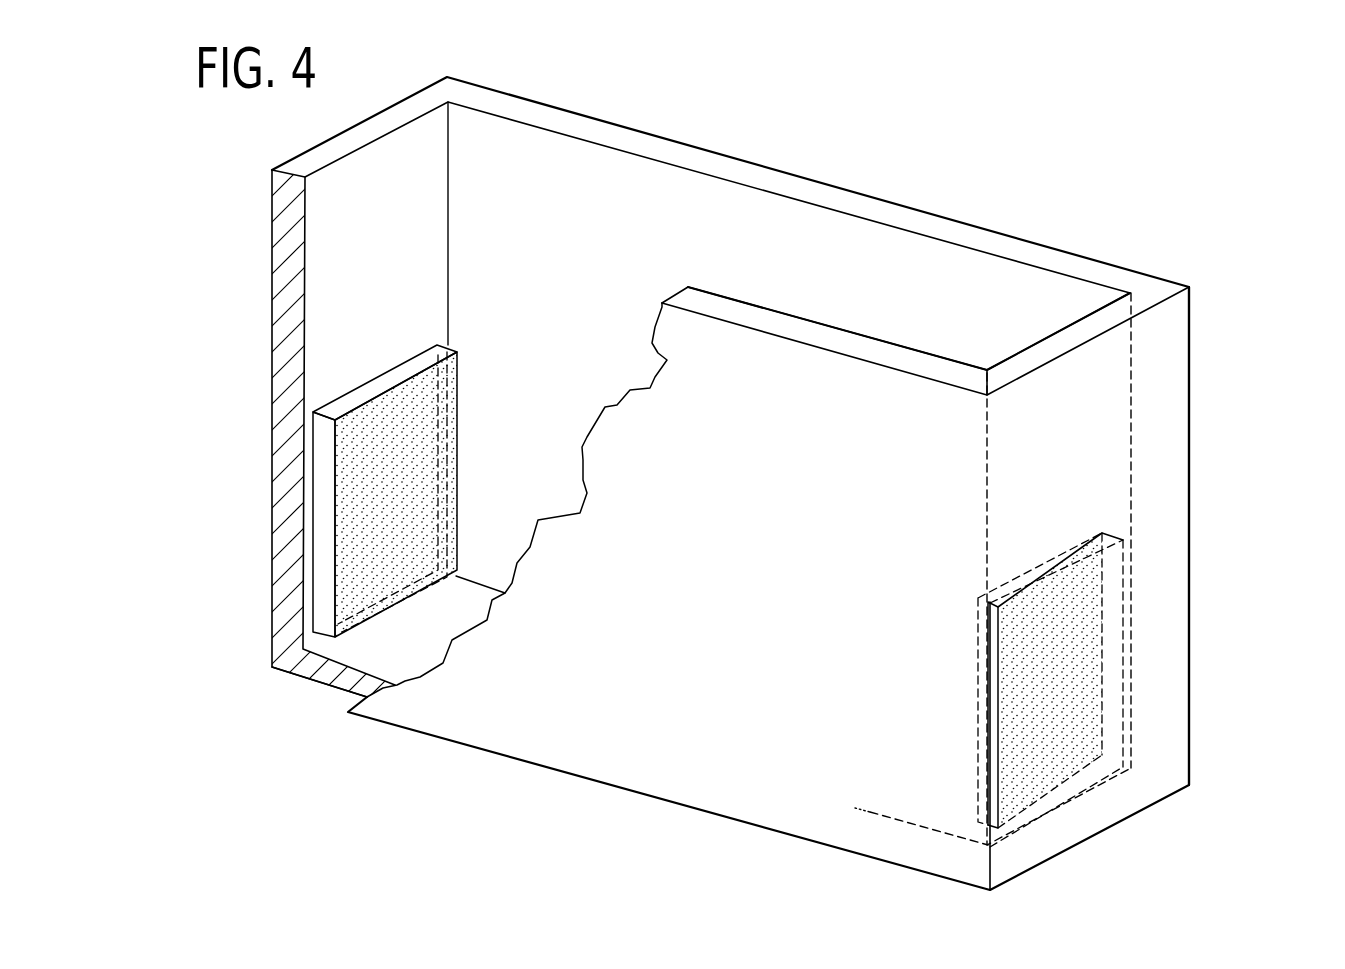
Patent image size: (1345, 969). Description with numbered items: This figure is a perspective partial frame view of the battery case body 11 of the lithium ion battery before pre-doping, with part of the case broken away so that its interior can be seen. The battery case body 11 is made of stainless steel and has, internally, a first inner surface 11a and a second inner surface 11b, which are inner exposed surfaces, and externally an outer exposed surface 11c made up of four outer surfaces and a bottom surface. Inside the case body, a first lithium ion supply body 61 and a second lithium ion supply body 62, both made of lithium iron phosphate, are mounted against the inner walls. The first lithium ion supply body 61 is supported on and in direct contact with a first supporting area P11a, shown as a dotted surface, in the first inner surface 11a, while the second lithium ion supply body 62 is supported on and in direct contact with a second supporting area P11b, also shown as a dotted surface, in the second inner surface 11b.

The battery case body 11 is at (1175, 355).
The first inner surface 11a is at (1050, 331).
The second inner surface 11b is at (358, 295).
The outer exposed surface 11c is at (1175, 515).
The first lithium ion supply body 61 is at (972, 725).
The second lithium ion supply body 62 is at (318, 588).
The first supporting area P11a is at (1090, 682).
The second supporting area P11b is at (403, 475).